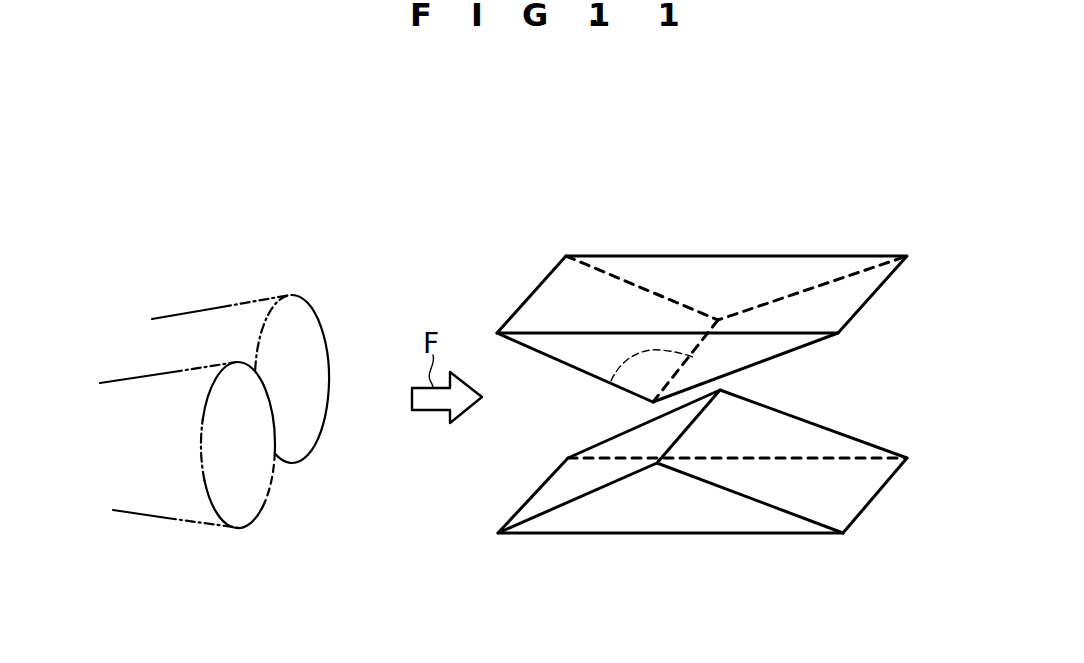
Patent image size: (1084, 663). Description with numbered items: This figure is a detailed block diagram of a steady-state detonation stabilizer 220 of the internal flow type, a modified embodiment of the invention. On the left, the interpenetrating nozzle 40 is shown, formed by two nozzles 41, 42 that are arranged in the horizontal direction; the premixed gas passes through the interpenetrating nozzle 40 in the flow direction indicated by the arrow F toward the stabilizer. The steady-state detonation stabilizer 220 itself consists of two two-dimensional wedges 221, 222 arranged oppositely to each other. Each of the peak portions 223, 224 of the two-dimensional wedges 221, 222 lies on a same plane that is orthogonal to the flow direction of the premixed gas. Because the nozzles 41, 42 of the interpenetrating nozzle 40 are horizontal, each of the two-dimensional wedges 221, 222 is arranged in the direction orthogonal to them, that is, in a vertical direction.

The interpenetrating nozzle 40 is at (177, 314).
The nozzle 41 is at (314, 313).
The nozzle 42 is at (265, 507).
The steady-state detonation stabilizer 220 is at (550, 147).
The two-dimensional wedge 221 is at (671, 337).
The two-dimensional wedge 222 is at (641, 480).
The peak portion 223 is at (605, 386).
The peak portion 224 is at (677, 438).